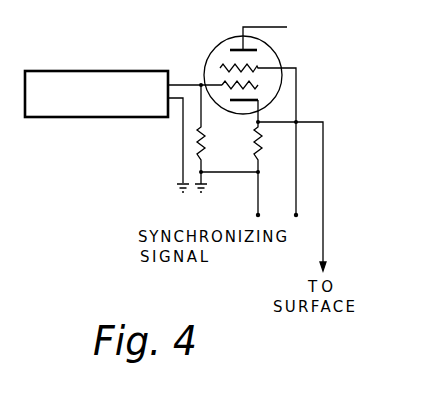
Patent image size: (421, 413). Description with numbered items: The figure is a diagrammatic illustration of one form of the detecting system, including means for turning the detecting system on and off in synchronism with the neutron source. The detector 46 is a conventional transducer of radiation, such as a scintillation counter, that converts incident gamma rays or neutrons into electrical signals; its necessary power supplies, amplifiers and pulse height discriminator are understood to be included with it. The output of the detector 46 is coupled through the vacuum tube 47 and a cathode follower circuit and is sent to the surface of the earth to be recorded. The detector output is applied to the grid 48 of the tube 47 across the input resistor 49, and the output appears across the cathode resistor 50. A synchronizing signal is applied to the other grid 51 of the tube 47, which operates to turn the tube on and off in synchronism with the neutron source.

The detector 46 is at (75, 73).
The vacuum tube 47 is at (216, 48).
The grid 48 is at (216, 83).
The input resistor 49 is at (205, 139).
The cathode resistor 50 is at (254, 141).
The grid 51 is at (256, 65).